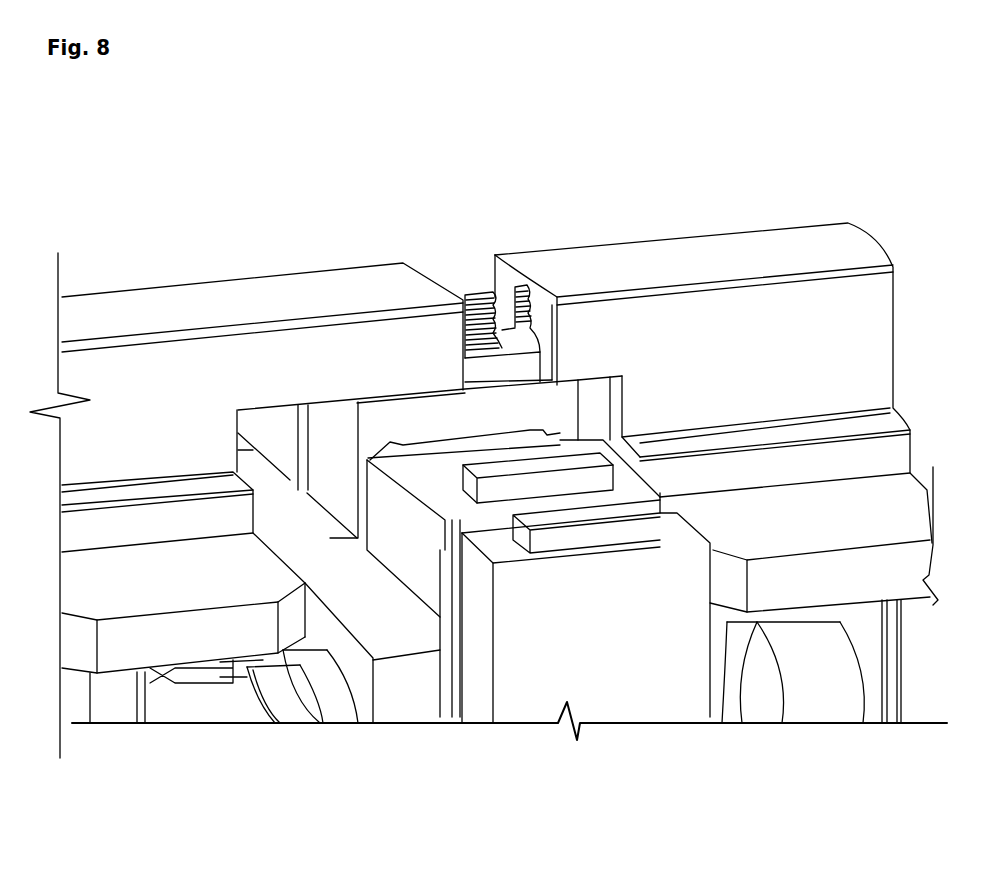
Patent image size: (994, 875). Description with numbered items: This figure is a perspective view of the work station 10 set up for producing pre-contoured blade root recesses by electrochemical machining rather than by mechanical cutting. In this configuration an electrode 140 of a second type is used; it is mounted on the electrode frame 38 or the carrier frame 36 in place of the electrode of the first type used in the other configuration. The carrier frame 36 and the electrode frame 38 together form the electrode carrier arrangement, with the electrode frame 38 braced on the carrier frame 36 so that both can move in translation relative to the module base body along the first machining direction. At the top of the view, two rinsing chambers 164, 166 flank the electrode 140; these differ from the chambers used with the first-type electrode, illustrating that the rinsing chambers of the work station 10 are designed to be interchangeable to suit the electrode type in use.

The work station 10 is at (336, 211).
The carrier frame 36 is at (395, 698).
The electrode frame 38 is at (417, 523).
The electrode of a second type 140 is at (477, 298).
The rinsing chamber 164 is at (620, 273).
The rinsing chamber 166 is at (255, 298).